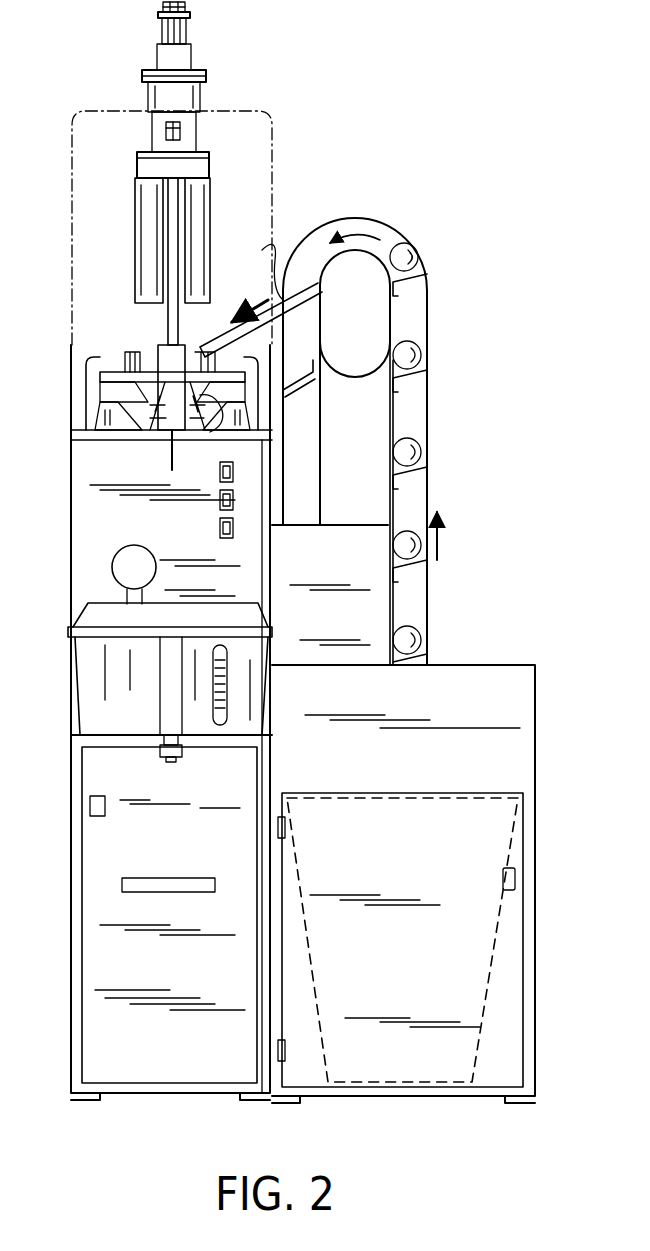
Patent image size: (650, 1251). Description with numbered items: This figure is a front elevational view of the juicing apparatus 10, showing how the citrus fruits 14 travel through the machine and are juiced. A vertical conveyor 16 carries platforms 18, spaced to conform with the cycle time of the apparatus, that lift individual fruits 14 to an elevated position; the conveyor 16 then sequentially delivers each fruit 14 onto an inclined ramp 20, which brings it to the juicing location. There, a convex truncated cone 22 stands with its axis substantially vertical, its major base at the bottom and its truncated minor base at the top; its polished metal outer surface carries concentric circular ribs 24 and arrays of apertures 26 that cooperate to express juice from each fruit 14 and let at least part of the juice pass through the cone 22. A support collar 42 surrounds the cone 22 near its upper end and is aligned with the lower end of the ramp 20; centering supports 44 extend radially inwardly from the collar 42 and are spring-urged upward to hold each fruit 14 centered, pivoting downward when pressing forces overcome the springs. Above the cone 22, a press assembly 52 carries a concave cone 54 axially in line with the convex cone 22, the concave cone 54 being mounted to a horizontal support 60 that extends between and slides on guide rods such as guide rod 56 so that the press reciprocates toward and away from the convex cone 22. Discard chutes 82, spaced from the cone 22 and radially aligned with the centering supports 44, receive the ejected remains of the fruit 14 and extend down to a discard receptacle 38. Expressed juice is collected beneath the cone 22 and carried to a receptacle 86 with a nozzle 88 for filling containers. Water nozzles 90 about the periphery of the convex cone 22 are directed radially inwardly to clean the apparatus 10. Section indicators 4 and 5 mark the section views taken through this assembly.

The juicing apparatus 10 is at (457, 140).
The citrus fruits 14 is at (414, 252).
The vertical conveyor 16 is at (432, 410).
The platforms 18 is at (425, 278).
The inclined ramp 20 is at (263, 252).
The convex truncated cone 22 is at (150, 396).
The circular ribs 24 is at (200, 432).
The apertures 26 is at (215, 422).
The discard receptacle 38 is at (505, 940).
The support collar 42 is at (112, 379).
The centering supports 44 is at (125, 355).
The press assembly 52 is at (133, 200).
The concave cone 54 is at (165, 55).
The guide rod 56 is at (166, 242).
The horizontal support 60 is at (212, 167).
The discard chutes 82 is at (107, 422).
The receptacle 86 is at (105, 690).
The nozzle 88 is at (168, 757).
The nozzles 90 is at (80, 416).
The section line 4- 4 is at (120, 347).
The section line 5- 5 is at (172, 133).